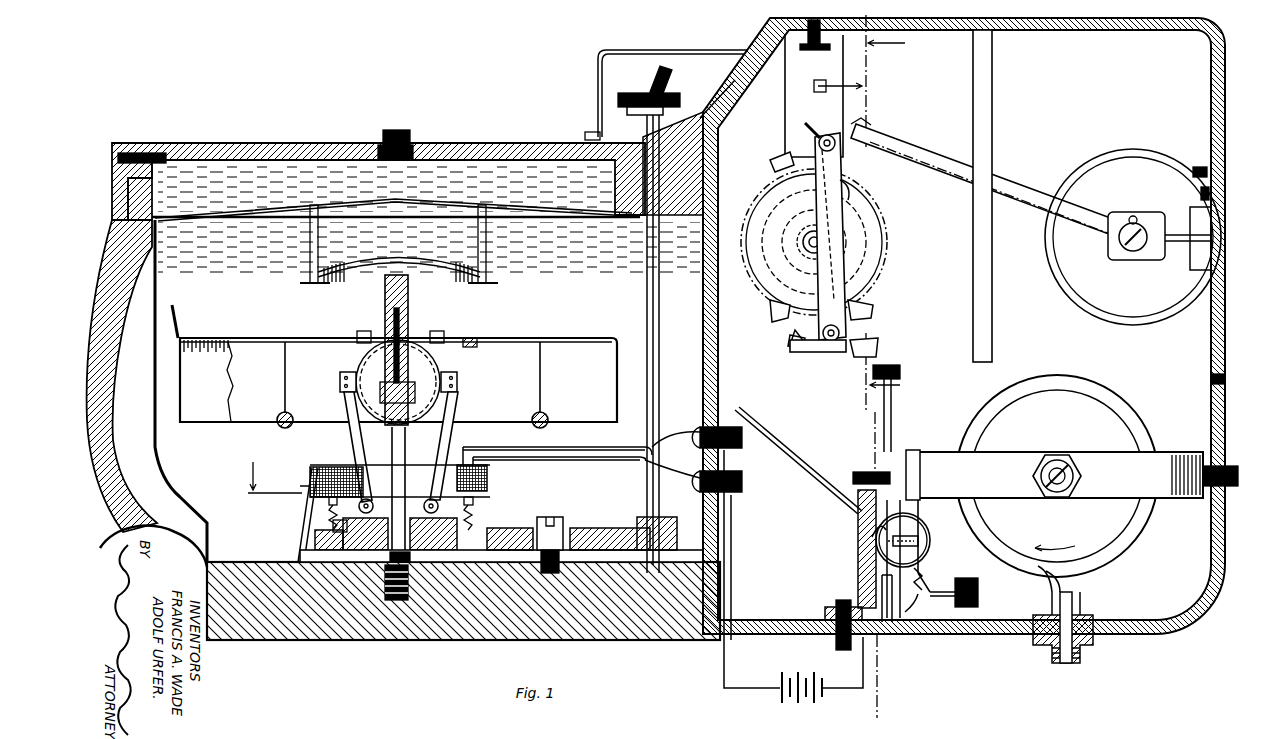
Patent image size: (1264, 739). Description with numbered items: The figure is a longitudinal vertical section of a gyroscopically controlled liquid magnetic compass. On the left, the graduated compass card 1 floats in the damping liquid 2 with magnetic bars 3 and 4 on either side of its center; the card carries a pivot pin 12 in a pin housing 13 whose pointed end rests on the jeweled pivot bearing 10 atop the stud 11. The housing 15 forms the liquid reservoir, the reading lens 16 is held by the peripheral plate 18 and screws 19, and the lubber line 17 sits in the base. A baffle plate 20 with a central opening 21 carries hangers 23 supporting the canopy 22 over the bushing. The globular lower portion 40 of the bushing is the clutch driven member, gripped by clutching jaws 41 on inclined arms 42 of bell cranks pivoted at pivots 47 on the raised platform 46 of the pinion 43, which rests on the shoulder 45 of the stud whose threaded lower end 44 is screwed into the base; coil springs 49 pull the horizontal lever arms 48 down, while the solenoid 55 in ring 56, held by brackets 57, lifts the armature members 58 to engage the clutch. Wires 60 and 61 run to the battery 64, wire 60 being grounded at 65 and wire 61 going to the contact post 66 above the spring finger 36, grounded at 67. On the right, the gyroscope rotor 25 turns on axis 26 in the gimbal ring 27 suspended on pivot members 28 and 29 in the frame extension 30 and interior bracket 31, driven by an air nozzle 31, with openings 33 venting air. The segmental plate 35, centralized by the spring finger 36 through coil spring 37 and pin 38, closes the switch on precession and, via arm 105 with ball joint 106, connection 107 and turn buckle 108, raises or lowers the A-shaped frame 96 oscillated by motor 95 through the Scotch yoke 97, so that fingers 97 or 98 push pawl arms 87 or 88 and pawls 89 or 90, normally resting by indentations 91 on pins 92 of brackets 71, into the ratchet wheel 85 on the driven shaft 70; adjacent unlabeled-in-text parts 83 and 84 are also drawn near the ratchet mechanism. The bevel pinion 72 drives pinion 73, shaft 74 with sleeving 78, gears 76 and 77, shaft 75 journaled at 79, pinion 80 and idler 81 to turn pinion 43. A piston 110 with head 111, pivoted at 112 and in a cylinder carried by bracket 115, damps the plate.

The graduated compass card 1 is at (198, 422).
The damping liquid 2 is at (472, 182).
The magnetic bar 3 is at (289, 417).
The magnetic bar 4 is at (546, 416).
The pivot bearing 10 is at (418, 392).
The stud 11 is at (390, 436).
The pivot pin 12 is at (402, 372).
The pin housing 13 is at (385, 312).
The housing 15 is at (532, 608).
The reading lens 16 is at (106, 292).
The lubber line 17 is at (181, 326).
The peripheral plate 18 is at (112, 199).
The screws 19 is at (118, 157).
The baffle plate 20 is at (262, 196).
The central opening 21 is at (400, 187).
The canopy 22 is at (388, 250).
The hangers 23 is at (308, 270).
The rotor 25 is at (1086, 385).
The rotor axis 26 is at (1057, 462).
The gimbal ring 27 is at (1166, 470).
The pivot member 28 is at (1216, 488).
The pivot member 29 is at (855, 475).
The frame extension 30 is at (1216, 559).
The interior bracket / nozzle 31 is at (858, 566).
The openings 33 is at (1211, 377).
The segmental plate 35 is at (920, 516).
The spring finger 36 is at (950, 615).
The coil spring 37 is at (907, 616).
The pin 38 is at (922, 575).
The lower portion of pin bushing 40 is at (362, 366).
The clutching jaws 41 is at (340, 381).
The inclined arms 42 is at (350, 411).
The pinion 43 is at (355, 552).
The lower end of stud 44 is at (390, 596).
The shoulder 45 is at (428, 556).
The raised platform 46 is at (470, 512).
The bell crank pivots 47 is at (376, 498).
The horizontal lever arms 48 is at (327, 513).
The coil springs 49 is at (333, 528).
The solenoid 55 is at (310, 473).
The ring 56 is at (488, 476).
The brackets 57 is at (300, 526).
The armature members 58 is at (480, 505).
The circuit wire 60 is at (588, 460).
The circuit wire 61 is at (585, 449).
The battery 64 is at (786, 697).
The ground connection 65 is at (835, 641).
The contact post 66 is at (978, 591).
The ground connection 67 is at (1040, 634).
The driven shaft 70 is at (826, 240).
The brackets 71 is at (843, 54).
The bevel pinion 72 is at (838, 260).
The pinion 73 is at (786, 239).
The shaft 74 is at (722, 178).
The shaft 75 is at (598, 113).
The gear 76 is at (666, 68).
The gear 77 is at (640, 93).
The sleeving 78 is at (726, 150).
The journal 79 is at (662, 576).
The pinion 80 is at (634, 530).
The idler 81 is at (575, 528).
The pawl 83 is at (840, 190).
The gear 84 is at (800, 256).
The ratchet wheel 85 is at (775, 316).
The pawl arm 87 is at (847, 172).
The pawl arm 88 is at (854, 312).
The pawl 89 is at (814, 129).
The pawl 90 is at (823, 343).
The indentations 91 is at (800, 344).
The pins 92 is at (782, 160).
The electric motor 95 is at (1128, 168).
The A-shaped frame 96 is at (1014, 187).
The actuating finger / Scotch yoke connection 97 is at (862, 124).
The actuating finger 98 is at (856, 354).
The arm 105 is at (892, 394).
The ball and socket joint 106 is at (900, 374).
The connection 107 is at (914, 452).
The turn buckle joint 108 is at (893, 423).
The piston 110 is at (925, 539).
The piston head 111 is at (870, 537).
The pivot 112 is at (925, 573).
The bracket 115 is at (881, 587).